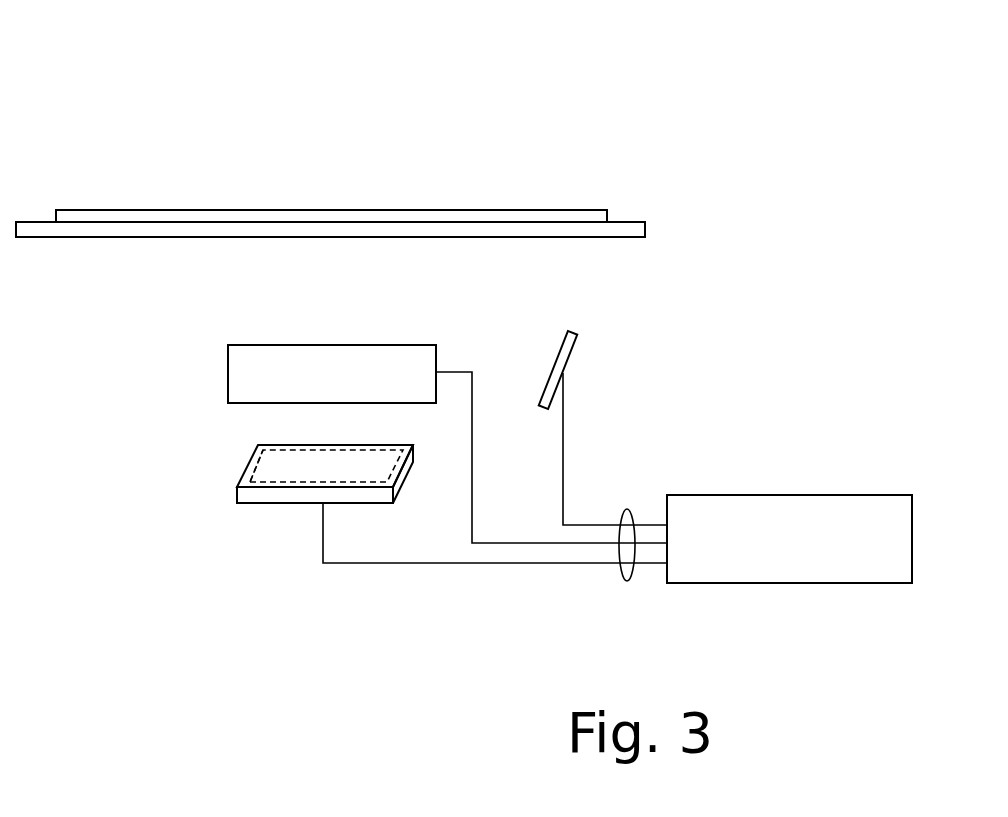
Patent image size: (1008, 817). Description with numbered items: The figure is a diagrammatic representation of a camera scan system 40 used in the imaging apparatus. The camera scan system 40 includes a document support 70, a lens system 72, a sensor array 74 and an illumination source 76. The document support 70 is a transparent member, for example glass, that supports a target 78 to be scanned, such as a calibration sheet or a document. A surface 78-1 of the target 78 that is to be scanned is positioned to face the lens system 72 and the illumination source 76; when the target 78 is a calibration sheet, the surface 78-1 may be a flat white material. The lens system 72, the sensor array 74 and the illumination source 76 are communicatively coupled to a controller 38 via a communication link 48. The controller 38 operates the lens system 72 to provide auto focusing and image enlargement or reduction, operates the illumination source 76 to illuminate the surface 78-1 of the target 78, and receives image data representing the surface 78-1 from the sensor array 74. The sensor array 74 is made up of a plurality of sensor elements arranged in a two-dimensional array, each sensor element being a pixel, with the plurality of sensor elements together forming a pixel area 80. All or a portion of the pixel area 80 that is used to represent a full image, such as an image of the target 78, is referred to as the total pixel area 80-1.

The camera scan system 40 is at (122, 151).
The document support 70 is at (646, 229).
The target 78 is at (523, 210).
The surface of target 78-1 is at (500, 223).
The lens system 72 is at (228, 375).
The illumination source 76 is at (575, 357).
The sensor array 74 is at (265, 504).
The pixel area 80 is at (276, 446).
The total pixel area 80-1 is at (252, 467).
The communication link 48 is at (627, 510).
The controller 38 is at (773, 570).